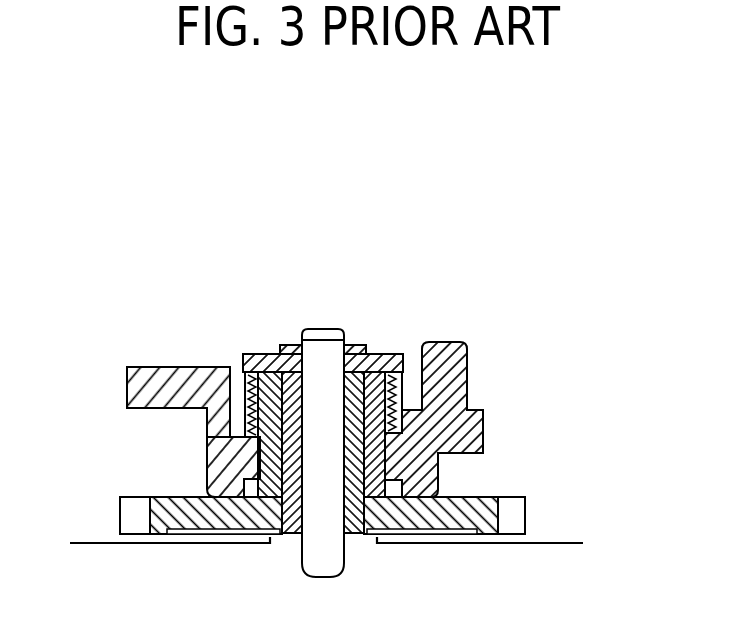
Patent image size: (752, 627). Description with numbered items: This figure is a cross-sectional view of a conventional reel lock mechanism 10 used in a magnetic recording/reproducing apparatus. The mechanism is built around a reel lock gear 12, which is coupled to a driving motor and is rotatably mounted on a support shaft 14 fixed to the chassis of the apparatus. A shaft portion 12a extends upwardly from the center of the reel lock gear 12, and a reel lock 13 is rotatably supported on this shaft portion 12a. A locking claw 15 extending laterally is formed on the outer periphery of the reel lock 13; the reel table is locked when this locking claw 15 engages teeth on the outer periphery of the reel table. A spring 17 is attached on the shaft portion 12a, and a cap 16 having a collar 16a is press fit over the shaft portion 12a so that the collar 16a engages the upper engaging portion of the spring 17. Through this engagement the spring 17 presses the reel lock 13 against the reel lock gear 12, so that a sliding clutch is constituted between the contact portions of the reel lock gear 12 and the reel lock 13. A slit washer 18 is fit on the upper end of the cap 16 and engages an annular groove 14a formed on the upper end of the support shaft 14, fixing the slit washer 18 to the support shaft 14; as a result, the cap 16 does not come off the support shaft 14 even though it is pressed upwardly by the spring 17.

The reel lock mechanism 10 is at (252, 200).
The reel lock gear 12 is at (492, 493).
The shaft portion 12a is at (208, 463).
The reel lock 13 is at (465, 340).
The support shaft 14 is at (327, 328).
The annular groove 14a is at (354, 347).
The locking claw 15 is at (128, 380).
The cap 16 is at (247, 351).
The collar 16a is at (243, 378).
The spring 17 is at (247, 383).
The slit washer 18 is at (290, 360).